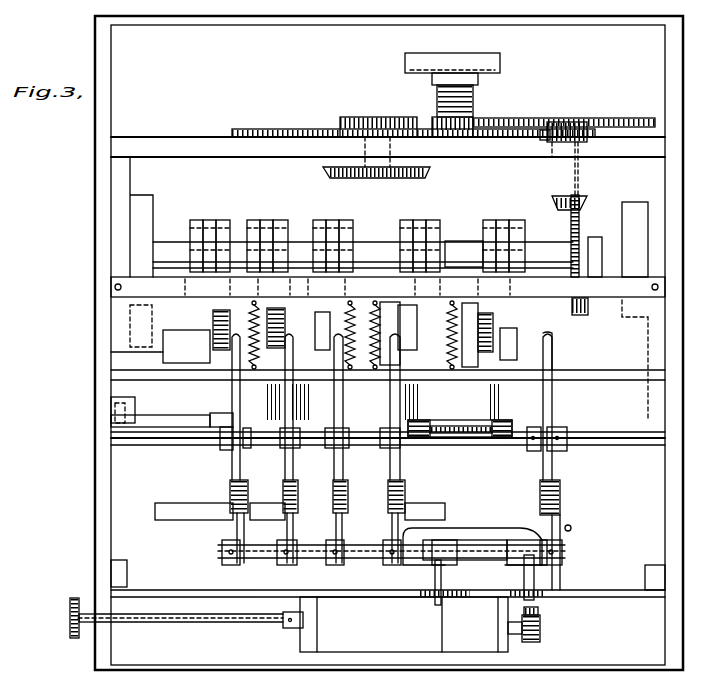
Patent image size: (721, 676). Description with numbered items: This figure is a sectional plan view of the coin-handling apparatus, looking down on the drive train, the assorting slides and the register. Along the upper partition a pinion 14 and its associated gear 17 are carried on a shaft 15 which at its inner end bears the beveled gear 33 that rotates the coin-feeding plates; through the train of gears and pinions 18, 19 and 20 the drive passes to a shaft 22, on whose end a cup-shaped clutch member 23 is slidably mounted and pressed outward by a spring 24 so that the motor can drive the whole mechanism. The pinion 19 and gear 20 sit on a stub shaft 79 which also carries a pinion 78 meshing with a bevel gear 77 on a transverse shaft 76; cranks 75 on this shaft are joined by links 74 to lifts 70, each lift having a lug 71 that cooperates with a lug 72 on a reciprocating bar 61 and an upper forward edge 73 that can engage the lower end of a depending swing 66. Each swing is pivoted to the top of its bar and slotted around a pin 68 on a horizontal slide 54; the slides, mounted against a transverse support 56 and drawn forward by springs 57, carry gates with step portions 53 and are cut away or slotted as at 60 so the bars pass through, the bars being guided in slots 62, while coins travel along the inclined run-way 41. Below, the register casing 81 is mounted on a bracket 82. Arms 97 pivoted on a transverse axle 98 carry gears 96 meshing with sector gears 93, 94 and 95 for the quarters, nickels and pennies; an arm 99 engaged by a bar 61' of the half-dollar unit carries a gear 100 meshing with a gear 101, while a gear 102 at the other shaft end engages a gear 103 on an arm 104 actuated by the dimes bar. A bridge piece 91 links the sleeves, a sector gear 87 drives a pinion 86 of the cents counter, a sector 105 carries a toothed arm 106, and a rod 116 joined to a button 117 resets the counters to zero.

The pinion 14 is at (358, 117).
The shaft 15 is at (352, 178).
The gear 17 is at (298, 128).
The gear 18 is at (540, 138).
The pinion 19 is at (588, 135).
The gear 20 is at (580, 118).
The shaft 22 is at (440, 100).
The cup-shaped member 23 is at (500, 64).
The spring 24 is at (473, 96).
The beveled gear 33 is at (397, 180).
The inclined run-way 41 is at (468, 437).
The step portion 53 is at (488, 437).
The horizontal slide 54 is at (276, 397).
The transverse support 56 is at (160, 275).
The spring 57 is at (265, 335).
The cut-away or slot 60 is at (462, 268).
The reciprocating bar 61 is at (350, 353).
The bar 61' is at (572, 350).
The slot 62 is at (472, 350).
The depending swing 66 is at (497, 318).
The pin 68 is at (215, 330).
The lift 70 is at (376, 242).
The lug 71 is at (194, 322).
The lug 72 is at (188, 327).
The upper forward edge 73 is at (220, 300).
The link 74 is at (260, 218).
The crank 75 is at (222, 220).
The transverse shaft 76 is at (566, 255).
The bevel gear 77 is at (580, 220).
The pinion 78 is at (560, 197).
The stub shaft 79 is at (580, 185).
The casing 81 is at (404, 624).
The bracket 82 is at (197, 590).
The pinion 86 is at (540, 640).
The sector gear 87 is at (540, 610).
The bridge piece 91 is at (470, 528).
The sector gear 93 is at (392, 526).
The sector gear 94 is at (336, 523).
The sector gear 95 is at (288, 523).
The gear 96 is at (299, 492).
The arm 97 is at (294, 462).
The transverse axle 98 is at (388, 453).
The arm 99 is at (553, 418).
The gear 100 is at (561, 494).
The gear 101 is at (572, 524).
The gear 102 is at (236, 527).
The gear 103 is at (230, 486).
The arm 104 is at (230, 462).
The sector 105 is at (445, 566).
The arm 106 is at (435, 582).
The rod 116 is at (222, 623).
The button 117 is at (72, 636).